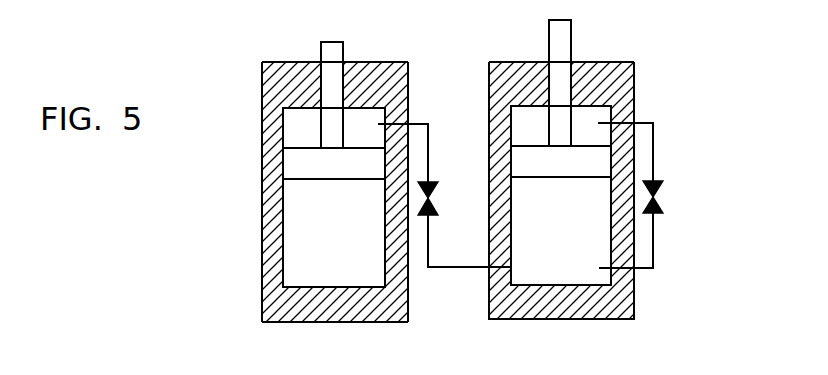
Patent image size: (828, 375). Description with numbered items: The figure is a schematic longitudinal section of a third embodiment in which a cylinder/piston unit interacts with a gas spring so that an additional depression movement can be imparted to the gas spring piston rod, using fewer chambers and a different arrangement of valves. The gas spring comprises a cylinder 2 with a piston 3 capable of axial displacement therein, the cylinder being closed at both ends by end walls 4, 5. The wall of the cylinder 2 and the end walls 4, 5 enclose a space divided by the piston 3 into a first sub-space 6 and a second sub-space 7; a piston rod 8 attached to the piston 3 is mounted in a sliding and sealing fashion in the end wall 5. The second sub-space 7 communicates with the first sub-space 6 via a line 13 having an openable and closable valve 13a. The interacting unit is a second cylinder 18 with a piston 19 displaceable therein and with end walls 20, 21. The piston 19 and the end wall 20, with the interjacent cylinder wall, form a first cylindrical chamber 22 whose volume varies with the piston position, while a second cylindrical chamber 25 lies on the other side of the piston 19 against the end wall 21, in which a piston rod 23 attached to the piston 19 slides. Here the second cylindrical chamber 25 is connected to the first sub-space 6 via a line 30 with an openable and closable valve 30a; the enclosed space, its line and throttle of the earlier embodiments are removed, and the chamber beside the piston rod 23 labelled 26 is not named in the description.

The cylinder 2 is at (625, 143).
The piston 3 is at (554, 169).
The first end wall 4 is at (500, 224).
The second end wall 5 is at (618, 80).
The first sub-space 6 is at (552, 239).
The second sub-space 7 is at (582, 134).
The piston rod 8 is at (565, 42).
The line 13 is at (655, 158).
The valve 13a is at (657, 197).
The second cylinder 18 is at (270, 123).
The piston 19 is at (325, 172).
The end wall 20 is at (348, 308).
The end wall 21 is at (378, 67).
The first cylindrical chamber 22 is at (324, 240).
The piston rod 23 is at (333, 50).
The second cylindrical chamber 25 is at (354, 138).
The upper chamber 26 is at (520, 134).
The line 30 is at (428, 159).
The valve 30a is at (432, 205).